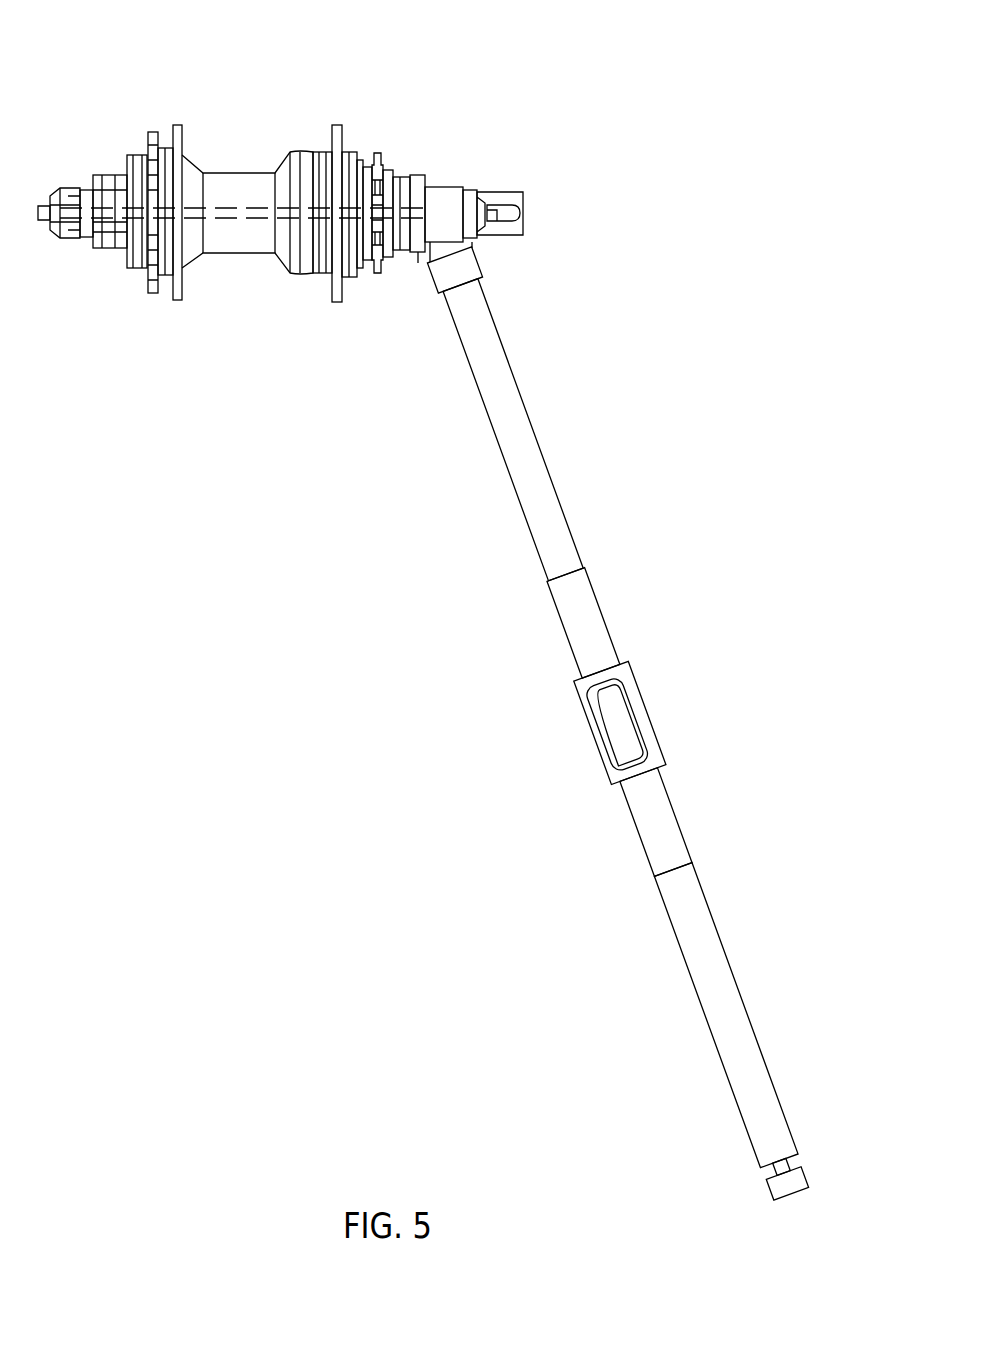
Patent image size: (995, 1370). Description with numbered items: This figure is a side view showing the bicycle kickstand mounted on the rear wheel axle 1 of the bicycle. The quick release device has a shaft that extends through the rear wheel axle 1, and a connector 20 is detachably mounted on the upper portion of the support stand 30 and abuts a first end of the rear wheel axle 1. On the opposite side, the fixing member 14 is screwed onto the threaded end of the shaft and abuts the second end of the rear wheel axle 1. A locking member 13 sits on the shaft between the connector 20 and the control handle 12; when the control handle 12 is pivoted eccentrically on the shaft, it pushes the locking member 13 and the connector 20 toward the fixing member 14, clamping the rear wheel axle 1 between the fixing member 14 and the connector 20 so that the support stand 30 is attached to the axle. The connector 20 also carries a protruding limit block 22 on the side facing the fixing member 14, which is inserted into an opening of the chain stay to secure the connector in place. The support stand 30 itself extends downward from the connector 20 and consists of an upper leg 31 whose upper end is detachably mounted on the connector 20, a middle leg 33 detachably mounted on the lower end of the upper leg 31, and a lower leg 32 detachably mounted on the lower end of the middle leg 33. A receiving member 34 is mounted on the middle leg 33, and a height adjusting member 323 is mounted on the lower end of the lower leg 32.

The rear wheel axle 1 is at (240, 243).
The control handle 12 is at (513, 193).
The locking member 13 is at (468, 200).
The fixing member 14 is at (63, 196).
The connector 20 is at (445, 210).
The limit block 22 is at (419, 265).
The support stand 30 is at (568, 723).
The upper leg 31 is at (525, 437).
The lower leg 32 is at (715, 978).
The middle leg 33 is at (580, 622).
The receiving member 34 is at (577, 687).
The height adjusting member 323 is at (782, 1187).